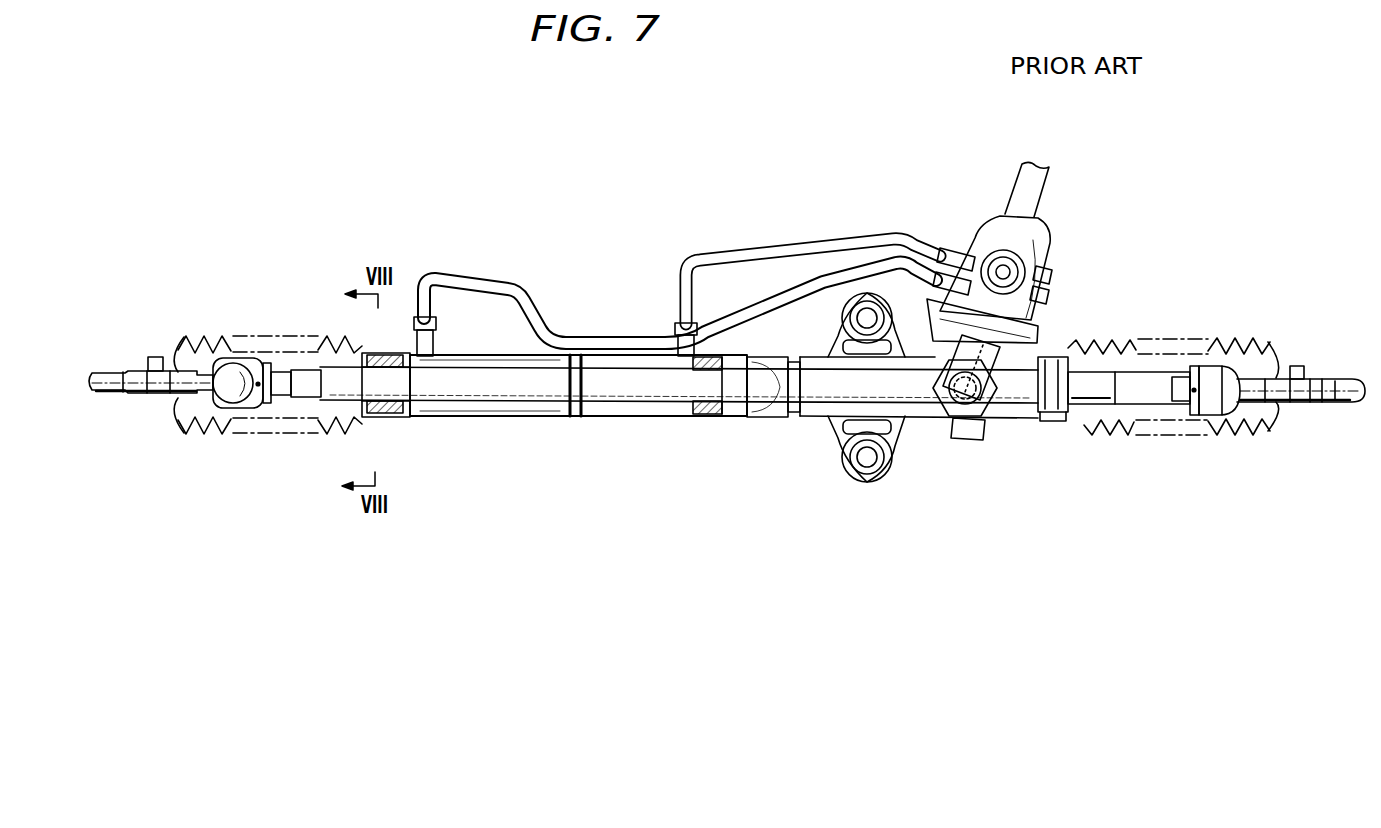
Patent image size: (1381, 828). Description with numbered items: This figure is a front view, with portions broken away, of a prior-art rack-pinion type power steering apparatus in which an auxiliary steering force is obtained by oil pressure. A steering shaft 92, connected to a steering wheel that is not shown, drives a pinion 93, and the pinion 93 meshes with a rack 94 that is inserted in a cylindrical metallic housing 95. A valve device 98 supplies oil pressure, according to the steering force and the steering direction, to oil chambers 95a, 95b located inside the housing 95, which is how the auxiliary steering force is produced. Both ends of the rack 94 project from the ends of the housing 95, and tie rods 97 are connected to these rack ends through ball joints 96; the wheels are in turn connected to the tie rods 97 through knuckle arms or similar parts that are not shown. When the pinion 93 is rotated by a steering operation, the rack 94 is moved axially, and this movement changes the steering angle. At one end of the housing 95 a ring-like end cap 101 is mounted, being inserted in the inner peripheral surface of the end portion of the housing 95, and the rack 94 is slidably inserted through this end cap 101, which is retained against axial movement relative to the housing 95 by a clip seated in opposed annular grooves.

The steering shaft 92 is at (1040, 168).
The pinion 93 is at (1042, 315).
The rack 94 is at (622, 388).
The housing 95 is at (632, 418).
The oil chamber 95a is at (468, 418).
The oil chamber 95b is at (681, 418).
The ball joint 96 is at (237, 408).
The tie rod 97 is at (106, 394).
The valve device 98 is at (1048, 237).
The end cap 101 is at (398, 417).